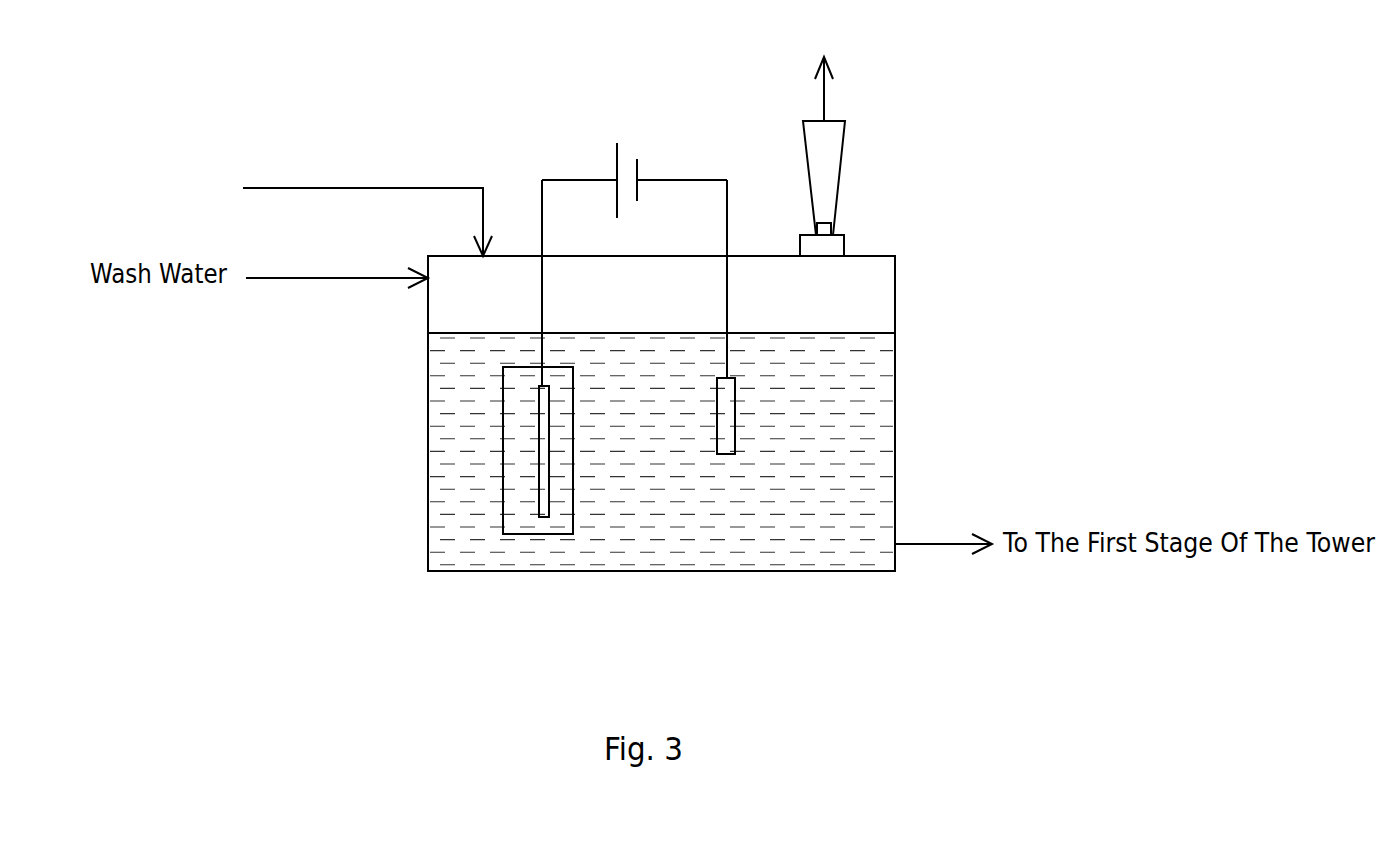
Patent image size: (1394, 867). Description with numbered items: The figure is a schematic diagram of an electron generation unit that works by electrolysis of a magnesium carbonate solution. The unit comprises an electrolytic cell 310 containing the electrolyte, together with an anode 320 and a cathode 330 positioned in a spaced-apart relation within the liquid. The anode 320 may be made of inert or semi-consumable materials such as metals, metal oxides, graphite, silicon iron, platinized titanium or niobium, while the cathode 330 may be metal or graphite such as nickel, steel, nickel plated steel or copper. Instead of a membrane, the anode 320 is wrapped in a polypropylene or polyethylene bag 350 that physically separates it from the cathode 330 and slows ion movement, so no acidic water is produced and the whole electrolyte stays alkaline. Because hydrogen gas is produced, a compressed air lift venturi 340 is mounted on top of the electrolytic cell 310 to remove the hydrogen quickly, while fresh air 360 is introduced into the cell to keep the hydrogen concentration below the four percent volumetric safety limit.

The electrolytic cell 310 is at (800, 572).
The anode 320 is at (543, 502).
The cathode 330 is at (727, 421).
The compressed air lift venturi 340 is at (843, 158).
The PP or PE bag 350 is at (503, 458).
The fresh air 360 is at (367, 205).